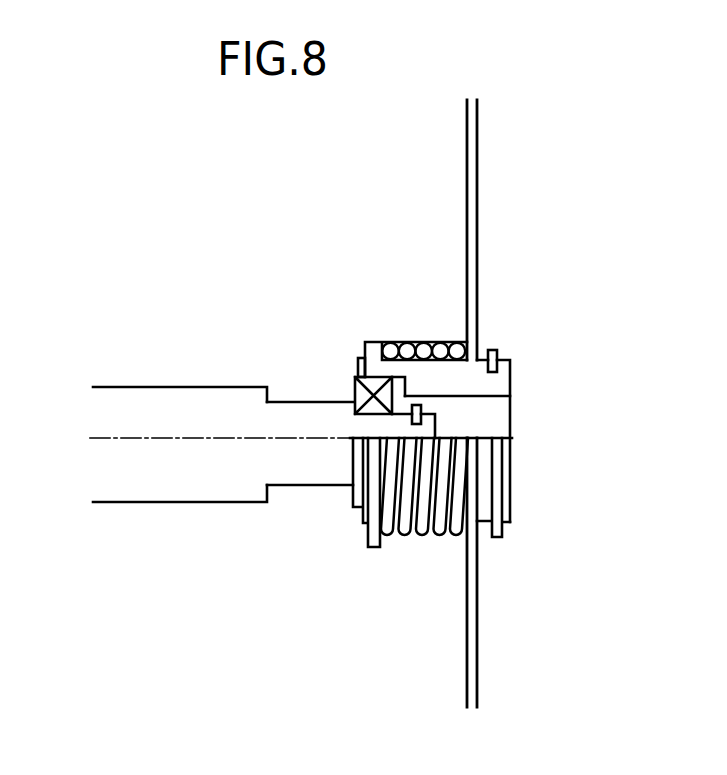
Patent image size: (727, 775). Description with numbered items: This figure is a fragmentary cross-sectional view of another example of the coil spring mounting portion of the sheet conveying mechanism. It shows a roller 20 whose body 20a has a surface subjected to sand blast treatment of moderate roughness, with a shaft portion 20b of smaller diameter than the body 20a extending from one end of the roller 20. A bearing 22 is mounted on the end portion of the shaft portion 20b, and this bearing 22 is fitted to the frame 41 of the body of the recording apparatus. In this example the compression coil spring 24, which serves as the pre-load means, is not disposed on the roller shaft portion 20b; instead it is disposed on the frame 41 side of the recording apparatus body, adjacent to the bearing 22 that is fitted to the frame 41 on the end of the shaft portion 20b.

The roller 20 is at (212, 386).
The body 20a is at (192, 415).
The shaft portion 20b is at (305, 423).
The bearing 22 is at (375, 376).
The compression coil spring 24 is at (402, 345).
The frame 41 is at (474, 172).